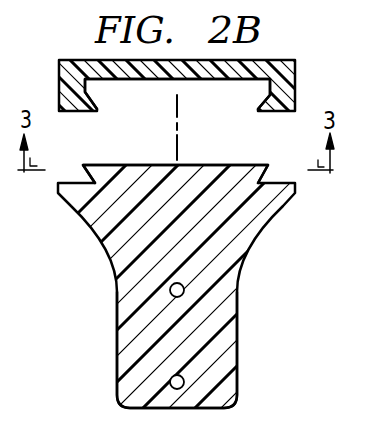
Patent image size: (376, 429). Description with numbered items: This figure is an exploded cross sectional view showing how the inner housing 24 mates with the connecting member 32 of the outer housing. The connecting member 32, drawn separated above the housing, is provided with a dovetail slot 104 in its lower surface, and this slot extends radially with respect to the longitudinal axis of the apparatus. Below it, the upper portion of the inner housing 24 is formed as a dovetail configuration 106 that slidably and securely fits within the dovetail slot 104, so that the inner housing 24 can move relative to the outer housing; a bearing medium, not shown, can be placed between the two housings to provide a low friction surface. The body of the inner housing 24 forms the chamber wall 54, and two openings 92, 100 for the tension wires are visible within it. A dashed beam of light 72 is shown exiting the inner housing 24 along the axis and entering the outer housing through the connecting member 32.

The inner housing 24 is at (263, 230).
The connecting member 32 is at (290, 111).
The chamber wall 54 is at (237, 352).
The beam of light 72 is at (179, 147).
The opening 92 is at (170, 288).
The opening 100 is at (172, 378).
The dovetail slot 104 is at (91, 98).
The dovetail configuration 106 is at (95, 164).